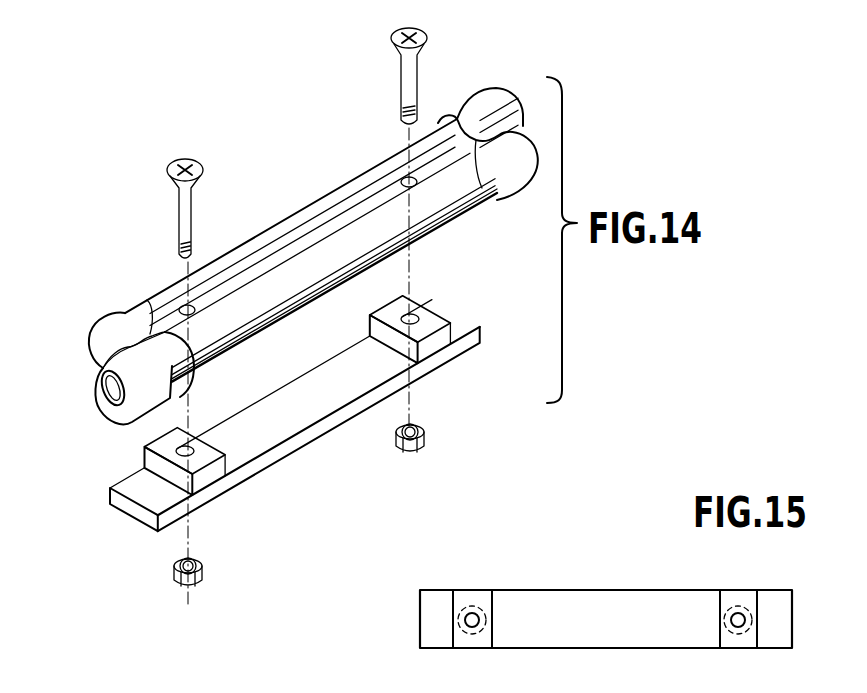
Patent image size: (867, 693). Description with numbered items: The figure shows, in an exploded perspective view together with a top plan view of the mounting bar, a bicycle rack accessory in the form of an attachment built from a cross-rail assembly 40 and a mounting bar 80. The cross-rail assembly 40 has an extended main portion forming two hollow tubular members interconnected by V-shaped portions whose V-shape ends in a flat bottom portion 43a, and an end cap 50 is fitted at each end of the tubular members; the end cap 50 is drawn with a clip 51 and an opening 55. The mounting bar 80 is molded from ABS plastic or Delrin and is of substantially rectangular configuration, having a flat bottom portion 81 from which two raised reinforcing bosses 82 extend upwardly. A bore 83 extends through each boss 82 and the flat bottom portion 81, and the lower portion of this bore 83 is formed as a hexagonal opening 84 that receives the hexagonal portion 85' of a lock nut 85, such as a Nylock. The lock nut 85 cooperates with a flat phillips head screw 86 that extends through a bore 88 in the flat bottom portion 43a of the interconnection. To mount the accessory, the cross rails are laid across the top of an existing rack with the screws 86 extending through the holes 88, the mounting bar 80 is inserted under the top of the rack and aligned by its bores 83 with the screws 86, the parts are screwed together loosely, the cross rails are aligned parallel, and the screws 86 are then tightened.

In FIG. 14, the cross-rail assembly 40 is at (280, 239).
In FIG. 14, the flat bottom portion 43a is at (288, 258).
In FIG. 14, the end cap 50 is at (518, 88).
In FIG. 14, the spring clip 51 is at (124, 316).
In FIG. 14, the pin bore 55 is at (122, 418).
In FIG. 14, the mounting bar 80 is at (348, 432).
In FIG. 15, the mounting bar 80 is at (644, 590).
In FIG. 14, the flat bottom portion 81 is at (275, 470).
In FIG. 15, the flat bottom portion 81 is at (550, 610).
In FIG. 14, the raised reinforcing boss 82 is at (433, 367).
In FIG. 15, the raised reinforcing boss 82 is at (475, 596).
In FIG. 14, the bore 83 is at (195, 452).
In FIG. 15, the hexagonal opening 84 is at (476, 645).
In FIG. 14, the lock nut 85 is at (308, 526).
In FIG. 14, the hexagonal portion 85' is at (287, 511).
In FIG. 14, the flat phillips head screw 86 is at (392, 47).
In FIG. 14, the bore 88 is at (406, 178).